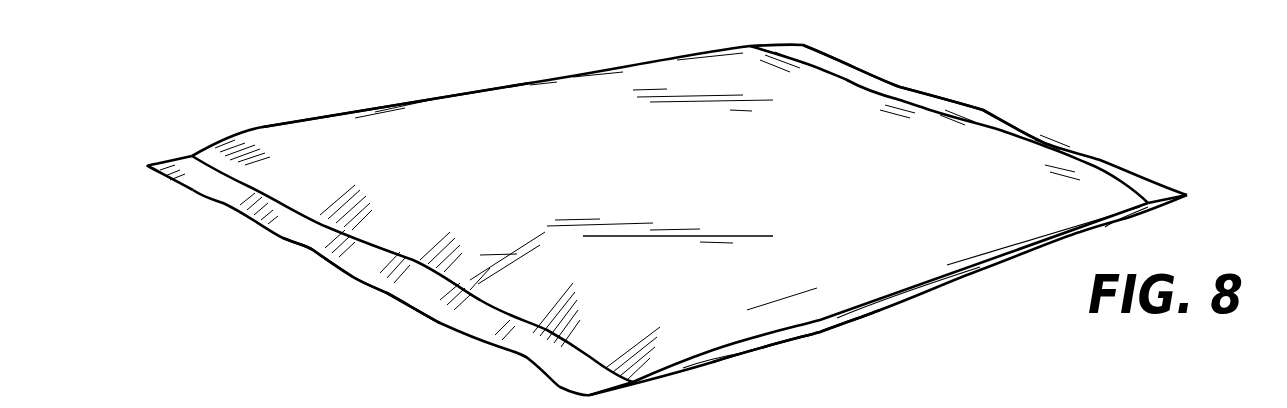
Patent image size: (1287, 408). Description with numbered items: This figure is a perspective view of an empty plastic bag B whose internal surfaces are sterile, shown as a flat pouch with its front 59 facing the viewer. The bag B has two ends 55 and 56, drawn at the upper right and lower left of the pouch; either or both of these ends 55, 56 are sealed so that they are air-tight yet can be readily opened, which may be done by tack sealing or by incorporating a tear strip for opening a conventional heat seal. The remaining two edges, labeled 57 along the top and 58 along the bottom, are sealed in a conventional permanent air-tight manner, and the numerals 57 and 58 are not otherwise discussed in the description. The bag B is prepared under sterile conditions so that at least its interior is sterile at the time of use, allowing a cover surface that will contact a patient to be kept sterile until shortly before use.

The end 55 is at (985, 110).
The end 56 is at (387, 292).
The top edge seal 57 is at (527, 80).
The bottom edge seal 58 is at (785, 347).
The front 59 is at (697, 200).
The plastic bag B is at (898, 305).